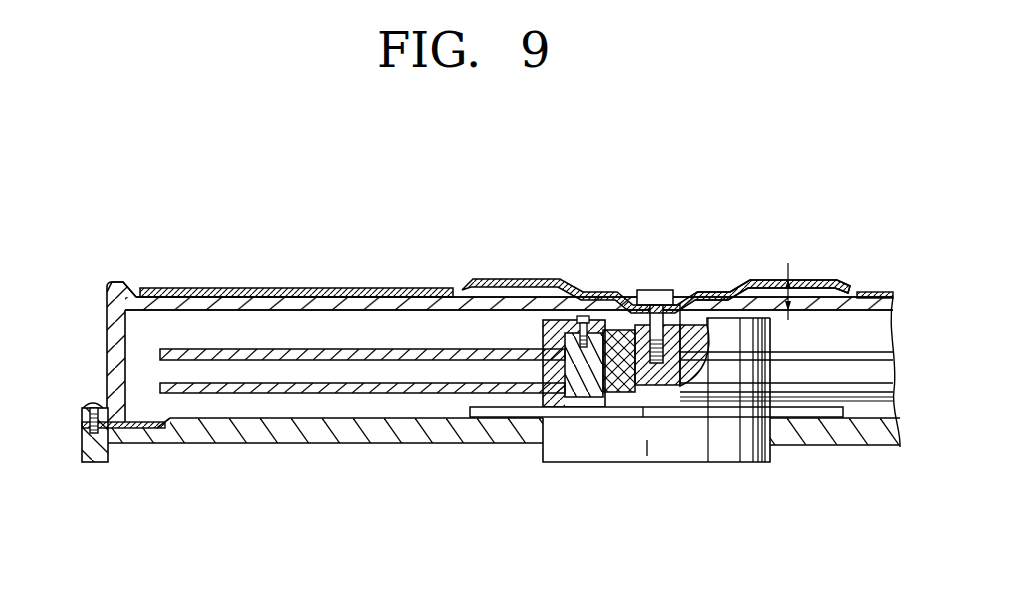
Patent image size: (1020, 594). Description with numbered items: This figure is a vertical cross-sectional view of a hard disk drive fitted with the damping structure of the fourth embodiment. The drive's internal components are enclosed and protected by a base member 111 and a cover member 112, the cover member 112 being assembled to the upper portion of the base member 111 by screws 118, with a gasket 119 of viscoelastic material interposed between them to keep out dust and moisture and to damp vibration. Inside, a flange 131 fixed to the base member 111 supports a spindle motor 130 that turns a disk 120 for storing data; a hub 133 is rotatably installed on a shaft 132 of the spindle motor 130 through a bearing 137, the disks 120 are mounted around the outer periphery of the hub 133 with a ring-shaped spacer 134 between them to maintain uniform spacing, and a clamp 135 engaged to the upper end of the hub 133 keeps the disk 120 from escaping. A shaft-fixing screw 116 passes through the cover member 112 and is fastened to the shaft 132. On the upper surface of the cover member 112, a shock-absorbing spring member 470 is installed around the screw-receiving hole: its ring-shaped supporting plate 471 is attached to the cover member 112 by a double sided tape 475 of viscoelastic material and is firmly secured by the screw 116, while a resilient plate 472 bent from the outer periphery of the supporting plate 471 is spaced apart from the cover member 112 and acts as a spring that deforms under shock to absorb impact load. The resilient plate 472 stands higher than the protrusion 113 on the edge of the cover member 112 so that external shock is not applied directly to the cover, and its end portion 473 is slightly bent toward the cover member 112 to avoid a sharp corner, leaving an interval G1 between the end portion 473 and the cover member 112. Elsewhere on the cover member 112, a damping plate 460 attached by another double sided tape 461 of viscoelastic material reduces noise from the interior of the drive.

The base member 111 is at (84, 443).
The cover member 112 is at (110, 322).
The protrusion 113 is at (110, 284).
The shaft-fixing screw 116 is at (655, 292).
The screws 118 is at (93, 404).
The gasket 119 is at (117, 430).
The disk 120 is at (377, 393).
The spindle motor 130 is at (682, 478).
The flange 131 is at (483, 418).
The shaft 132 is at (671, 306).
The hub 133 is at (592, 397).
The ring-shaped spacer 134 is at (543, 350).
The clamp 135 is at (565, 330).
The bearing 137 is at (615, 310).
The damping plate 460 is at (341, 288).
The double sided tape 461 is at (409, 297).
The shock-absorbing spring member 470 is at (524, 270).
The supporting plate 471 is at (717, 297).
The resilient plate 472 is at (805, 281).
The end portion 473 is at (843, 281).
The double sided tape 475 is at (706, 322).
The interval G1 is at (801, 301).